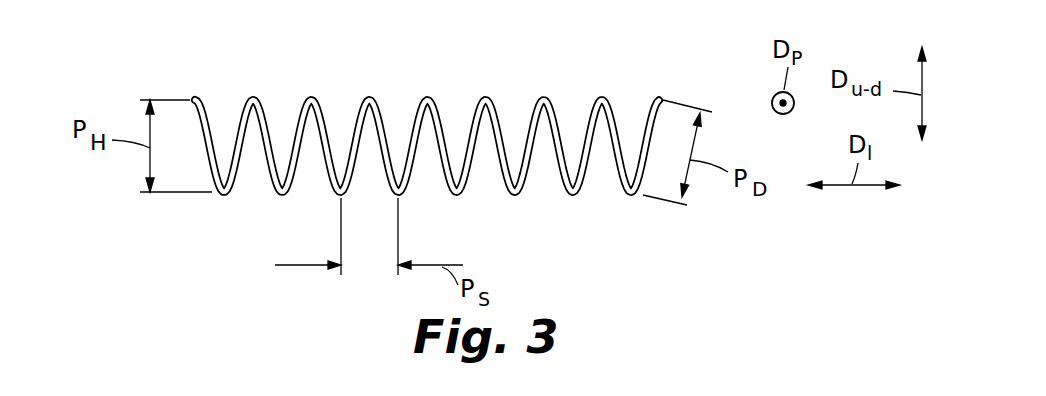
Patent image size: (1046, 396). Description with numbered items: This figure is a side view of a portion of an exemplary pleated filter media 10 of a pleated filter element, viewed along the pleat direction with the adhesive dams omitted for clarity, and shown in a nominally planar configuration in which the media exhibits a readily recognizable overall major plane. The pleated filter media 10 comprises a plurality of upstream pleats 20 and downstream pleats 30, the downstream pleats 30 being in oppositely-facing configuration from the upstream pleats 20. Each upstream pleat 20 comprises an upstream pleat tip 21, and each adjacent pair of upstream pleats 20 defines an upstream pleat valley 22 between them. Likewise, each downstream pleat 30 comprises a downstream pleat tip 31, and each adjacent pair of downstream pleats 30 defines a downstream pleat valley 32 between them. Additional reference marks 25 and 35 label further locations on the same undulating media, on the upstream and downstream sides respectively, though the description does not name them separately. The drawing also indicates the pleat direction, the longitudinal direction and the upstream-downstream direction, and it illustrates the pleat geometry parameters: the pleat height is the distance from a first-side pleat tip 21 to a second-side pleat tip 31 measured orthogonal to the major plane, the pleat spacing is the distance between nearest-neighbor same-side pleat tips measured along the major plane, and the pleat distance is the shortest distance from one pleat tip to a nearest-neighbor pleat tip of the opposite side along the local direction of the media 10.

The pleated filter media 10 is at (247, 105).
The upstream pleat 20 is at (224, 196).
The upstream pleat tip 21 is at (282, 196).
The upstream pleat valley 22 is at (487, 172).
The trough (downward bend) 25 is at (573, 196).
The downstream pleat 30 is at (302, 118).
The downstream pleat tip 31 is at (310, 100).
The downstream pleat valley 32 is at (342, 128).
The peak (upward bend) 35 is at (485, 98).